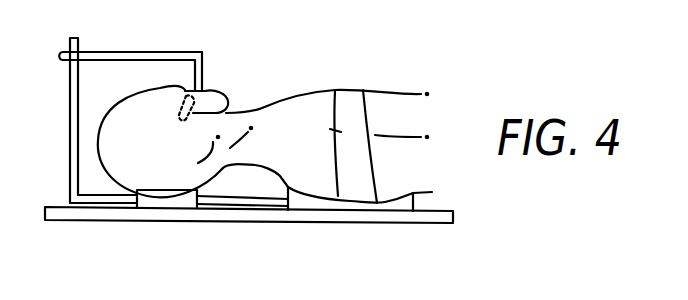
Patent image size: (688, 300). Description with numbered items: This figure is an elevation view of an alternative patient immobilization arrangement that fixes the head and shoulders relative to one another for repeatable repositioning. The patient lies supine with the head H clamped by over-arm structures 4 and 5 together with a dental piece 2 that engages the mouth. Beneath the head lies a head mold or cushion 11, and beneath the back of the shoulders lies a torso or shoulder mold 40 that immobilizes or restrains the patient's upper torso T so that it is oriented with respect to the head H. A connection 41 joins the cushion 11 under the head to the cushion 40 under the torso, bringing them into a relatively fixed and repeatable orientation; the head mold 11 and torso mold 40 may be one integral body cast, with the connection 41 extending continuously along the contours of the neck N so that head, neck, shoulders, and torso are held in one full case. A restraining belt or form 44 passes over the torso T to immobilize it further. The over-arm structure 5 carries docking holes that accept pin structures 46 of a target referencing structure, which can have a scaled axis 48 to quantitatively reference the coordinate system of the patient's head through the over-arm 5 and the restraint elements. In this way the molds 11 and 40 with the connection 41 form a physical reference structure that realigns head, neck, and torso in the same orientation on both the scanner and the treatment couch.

The dental piece 2 is at (224, 113).
The over-arm structure 4 is at (145, 52).
The over-arm structure 5 is at (69, 102).
The head mold 11 is at (173, 206).
The torso or shoulder mold 40 is at (325, 205).
The connection 41 is at (240, 208).
The restraining belt 44 is at (355, 95).
The pin structures 46 is at (456, 299).
The axis 48 is at (564, 299).
The head H is at (132, 178).
The neck N is at (249, 170).
The upper torso T is at (325, 100).